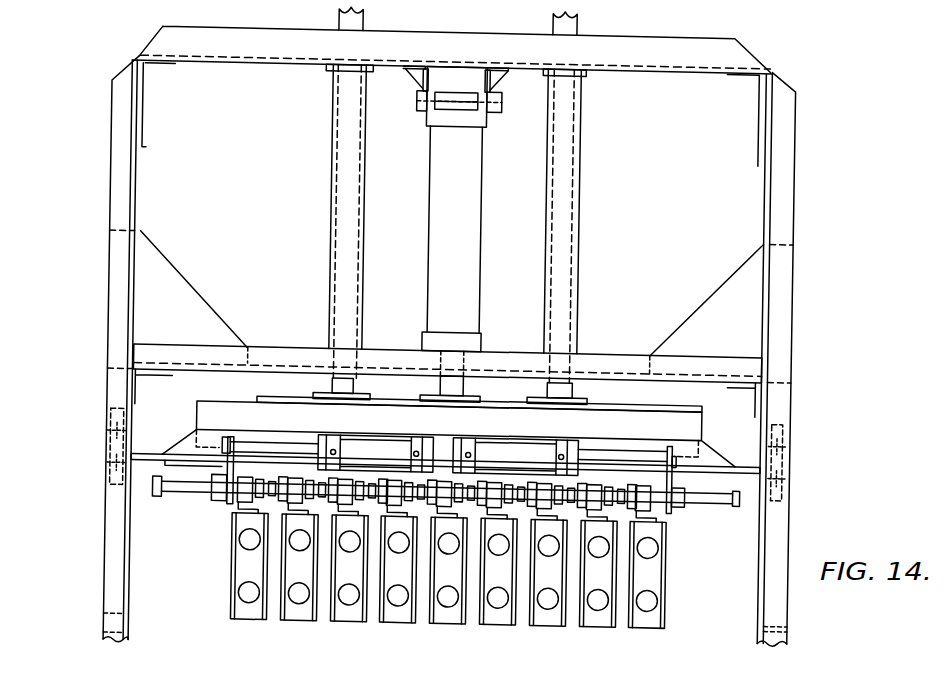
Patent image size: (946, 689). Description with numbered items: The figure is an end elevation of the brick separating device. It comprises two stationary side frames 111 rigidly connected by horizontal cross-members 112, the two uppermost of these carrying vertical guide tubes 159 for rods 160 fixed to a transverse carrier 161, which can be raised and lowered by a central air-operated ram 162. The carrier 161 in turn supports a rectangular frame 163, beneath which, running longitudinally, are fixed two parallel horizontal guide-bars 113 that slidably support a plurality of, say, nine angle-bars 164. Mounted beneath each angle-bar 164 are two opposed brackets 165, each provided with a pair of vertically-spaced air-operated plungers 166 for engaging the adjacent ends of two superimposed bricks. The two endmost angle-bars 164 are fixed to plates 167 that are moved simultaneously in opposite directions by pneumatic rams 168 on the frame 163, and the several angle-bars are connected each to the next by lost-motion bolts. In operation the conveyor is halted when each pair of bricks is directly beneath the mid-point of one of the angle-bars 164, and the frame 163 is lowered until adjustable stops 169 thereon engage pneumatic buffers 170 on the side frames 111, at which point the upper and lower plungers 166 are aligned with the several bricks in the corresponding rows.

The stationary side frames 111 is at (120, 181).
The horizontal cross-members 112 is at (247, 50).
The horizontal guide-bars 113 is at (357, 462).
The vertical guide tubes 159 is at (361, 212).
The rods 160 is at (348, 385).
The transverse carrier 161 is at (498, 417).
The central air-operated ram 162 is at (463, 215).
The rectangular frame 163 is at (247, 443).
The angle-bars 164 is at (290, 521).
The brackets 165 is at (252, 618).
The air-operated plungers 166 is at (450, 598).
The plates 167 is at (230, 508).
The pneumatic rams 168 is at (392, 463).
The adjustable stops 169 is at (113, 508).
The pneumatic buffers 170 is at (130, 633).